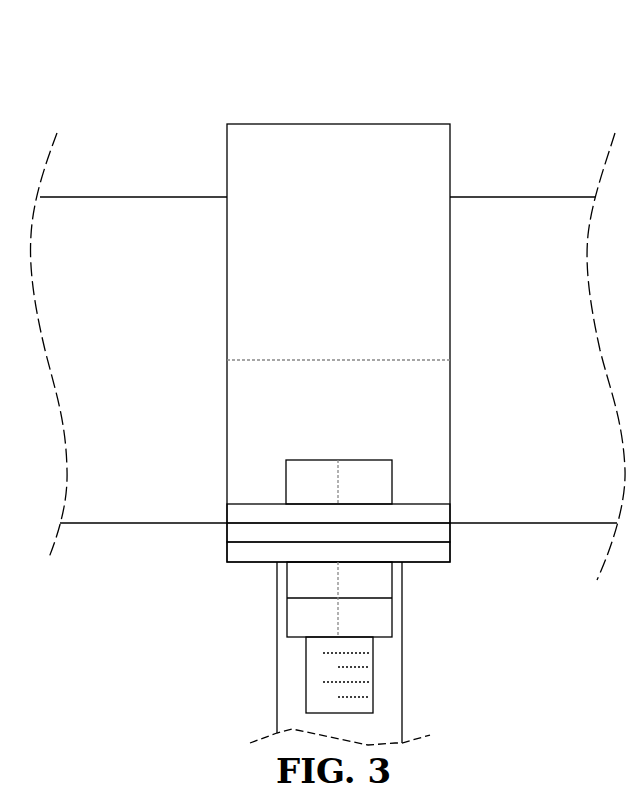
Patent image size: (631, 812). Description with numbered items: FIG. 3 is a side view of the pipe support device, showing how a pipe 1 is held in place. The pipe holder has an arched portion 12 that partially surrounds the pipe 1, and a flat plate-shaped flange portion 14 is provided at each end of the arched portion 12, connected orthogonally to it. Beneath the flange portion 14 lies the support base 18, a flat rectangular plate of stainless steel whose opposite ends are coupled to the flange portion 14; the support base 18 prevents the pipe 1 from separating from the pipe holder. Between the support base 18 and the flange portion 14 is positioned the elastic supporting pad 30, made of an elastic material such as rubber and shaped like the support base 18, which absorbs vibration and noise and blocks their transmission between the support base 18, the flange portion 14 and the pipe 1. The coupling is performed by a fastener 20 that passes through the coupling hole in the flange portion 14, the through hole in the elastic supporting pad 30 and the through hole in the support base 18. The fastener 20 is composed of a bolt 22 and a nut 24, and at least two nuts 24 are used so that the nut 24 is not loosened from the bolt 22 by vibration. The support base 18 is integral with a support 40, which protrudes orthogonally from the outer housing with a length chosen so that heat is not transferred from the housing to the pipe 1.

The pipe 1 is at (110, 213).
The arched portion 12 is at (303, 133).
The flange portion 14 is at (237, 513).
The support base 18 is at (260, 556).
The fastener 20 is at (430, 326).
The bolt 22 is at (380, 490).
The nut 24 is at (375, 577).
The elastic supporting pad 30 is at (242, 537).
The support 40 is at (395, 697).